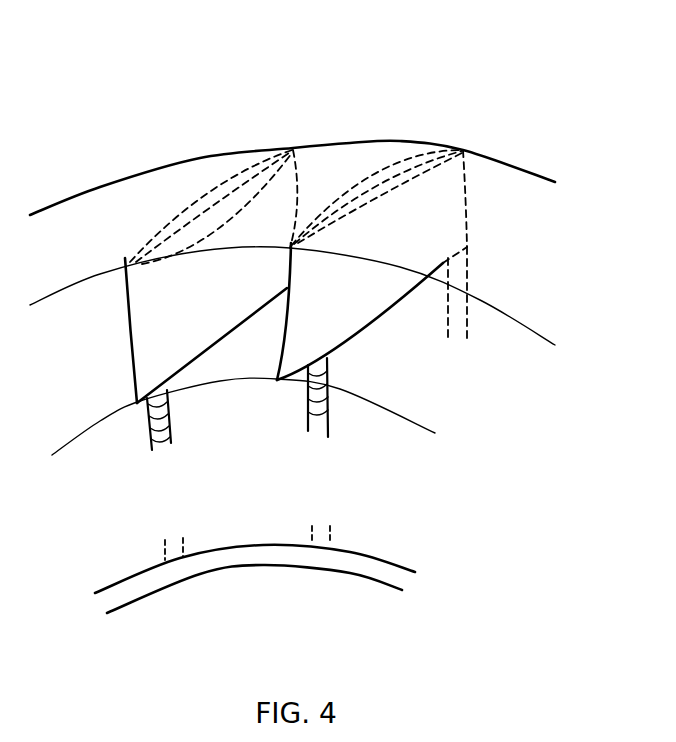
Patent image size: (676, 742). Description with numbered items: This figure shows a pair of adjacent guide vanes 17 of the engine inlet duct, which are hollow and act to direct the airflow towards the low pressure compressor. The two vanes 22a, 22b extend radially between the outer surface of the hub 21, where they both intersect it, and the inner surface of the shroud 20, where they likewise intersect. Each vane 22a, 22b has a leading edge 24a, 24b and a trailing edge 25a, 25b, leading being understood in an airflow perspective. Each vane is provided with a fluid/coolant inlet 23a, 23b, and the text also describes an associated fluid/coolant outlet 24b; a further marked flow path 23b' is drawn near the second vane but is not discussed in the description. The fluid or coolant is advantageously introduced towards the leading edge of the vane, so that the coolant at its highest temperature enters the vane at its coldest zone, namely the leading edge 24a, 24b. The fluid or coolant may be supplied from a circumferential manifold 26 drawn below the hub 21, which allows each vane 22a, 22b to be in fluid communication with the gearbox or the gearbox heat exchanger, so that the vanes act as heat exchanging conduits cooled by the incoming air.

The guide vane 17 is at (450, 178).
The shroud 20 is at (98, 203).
The hub 21 is at (80, 432).
The vane 22a is at (293, 148).
The vane 22b is at (463, 150).
The fluid/coolant inlet 23a is at (163, 452).
The fluid/coolant inlet 23b is at (319, 438).
The alternative second cooling channel 23b' is at (467, 328).
The leading edge 24a is at (131, 337).
The leading edge 24b is at (281, 333).
The trailing edge 25a is at (300, 170).
The trailing edge 25b is at (467, 198).
The circumferential manifold 26 is at (405, 578).